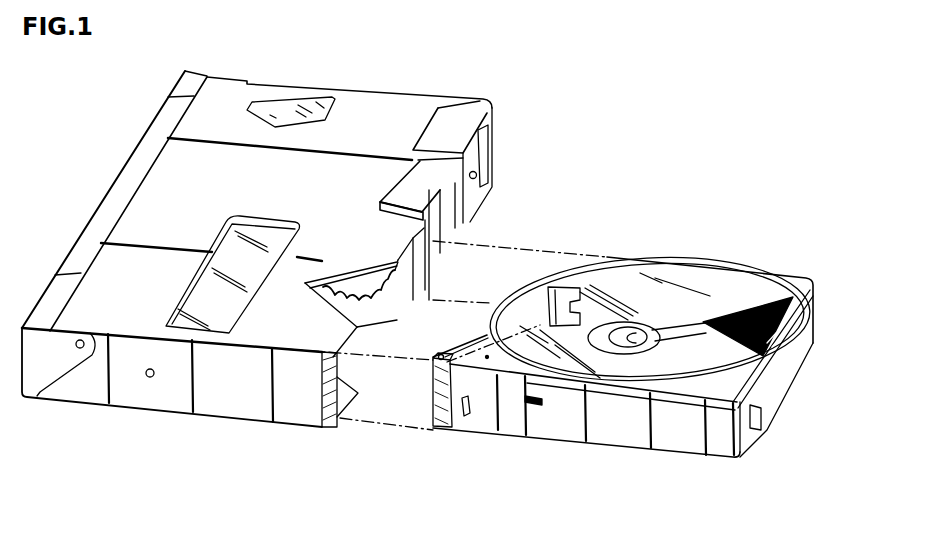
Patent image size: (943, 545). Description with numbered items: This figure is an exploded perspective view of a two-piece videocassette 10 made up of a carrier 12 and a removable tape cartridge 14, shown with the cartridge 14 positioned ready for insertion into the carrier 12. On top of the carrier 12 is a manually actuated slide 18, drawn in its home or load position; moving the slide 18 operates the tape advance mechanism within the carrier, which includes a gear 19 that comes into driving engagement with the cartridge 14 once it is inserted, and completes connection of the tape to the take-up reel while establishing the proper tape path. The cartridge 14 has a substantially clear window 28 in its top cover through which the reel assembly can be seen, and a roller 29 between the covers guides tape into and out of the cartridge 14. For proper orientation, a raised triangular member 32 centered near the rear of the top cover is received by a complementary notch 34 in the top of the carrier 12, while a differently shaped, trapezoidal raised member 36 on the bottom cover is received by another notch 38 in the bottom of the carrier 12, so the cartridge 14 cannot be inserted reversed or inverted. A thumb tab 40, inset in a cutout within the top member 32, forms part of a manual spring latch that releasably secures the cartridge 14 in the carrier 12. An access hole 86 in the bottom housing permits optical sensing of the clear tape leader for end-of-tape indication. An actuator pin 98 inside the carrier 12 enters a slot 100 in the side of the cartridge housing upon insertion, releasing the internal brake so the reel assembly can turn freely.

The two-piece videocassette 10 is at (534, 153).
The carrier 12 is at (378, 116).
The tape cartridge 14 is at (755, 278).
The slide 18 is at (449, 128).
The gear 19 is at (387, 297).
The window 28 is at (620, 288).
The roller 29 is at (433, 393).
The raised triangular member 32 is at (767, 304).
The notch 34 is at (323, 280).
The raised member 36 is at (757, 431).
The notch 38 is at (360, 330).
The thumb tab 40 is at (788, 296).
The access hole 86 is at (465, 417).
The actuator pin 98 is at (149, 378).
The slot 100 is at (533, 406).